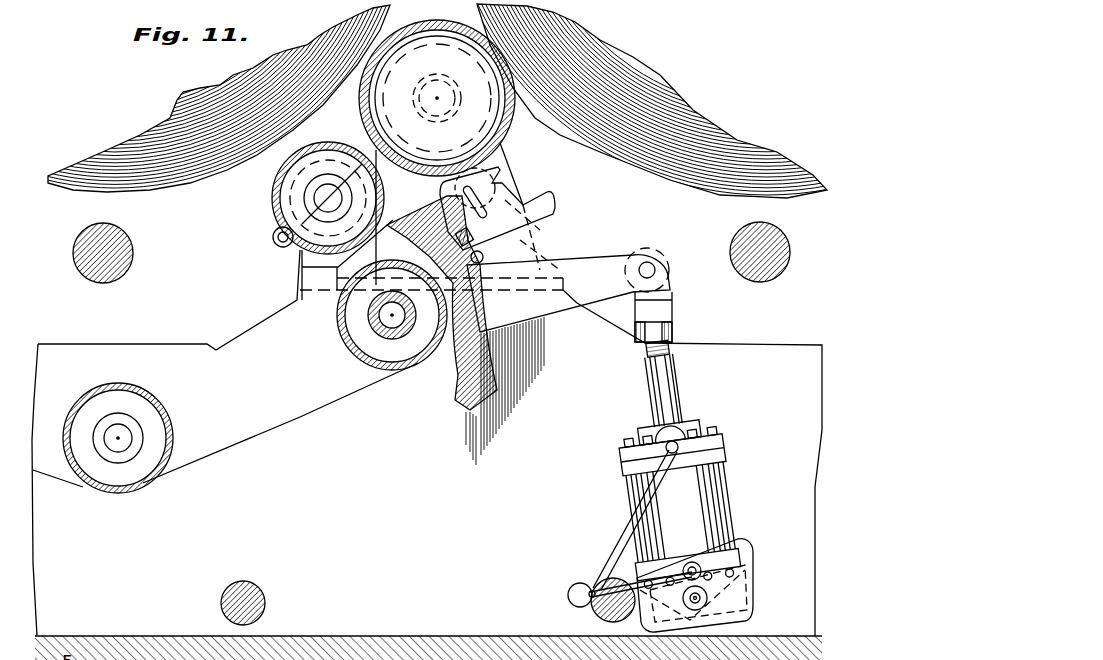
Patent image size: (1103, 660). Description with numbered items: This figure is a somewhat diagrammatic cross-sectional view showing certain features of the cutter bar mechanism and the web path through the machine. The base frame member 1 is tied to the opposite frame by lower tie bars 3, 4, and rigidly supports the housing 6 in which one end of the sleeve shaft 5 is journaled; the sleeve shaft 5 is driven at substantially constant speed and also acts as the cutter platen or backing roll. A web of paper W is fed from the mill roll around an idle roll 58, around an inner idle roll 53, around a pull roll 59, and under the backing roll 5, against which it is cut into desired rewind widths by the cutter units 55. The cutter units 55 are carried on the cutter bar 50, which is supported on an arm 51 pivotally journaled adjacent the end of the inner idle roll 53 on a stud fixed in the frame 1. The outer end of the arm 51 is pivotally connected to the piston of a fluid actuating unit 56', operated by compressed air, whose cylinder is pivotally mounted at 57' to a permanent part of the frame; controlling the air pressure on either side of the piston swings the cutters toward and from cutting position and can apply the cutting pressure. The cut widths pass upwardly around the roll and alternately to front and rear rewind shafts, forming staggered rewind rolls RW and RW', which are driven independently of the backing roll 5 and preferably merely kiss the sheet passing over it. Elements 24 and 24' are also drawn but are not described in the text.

The base frame member 1 is at (776, 345).
The lower tie bar 3 is at (265, 603).
The lower tie bar 4 is at (587, 607).
The sleeve shaft 5 is at (447, 24).
The housing 6 is at (302, 265).
The guide rod 24 is at (739, 252).
The guide rod 24' is at (126, 253).
The cutter bar 50 is at (455, 397).
The arm 51 is at (548, 306).
The inner idle roll 53 is at (340, 337).
The cutter unit 55 is at (530, 175).
The fluid actuating unit 56' is at (671, 462).
The cylinder pivot mounting 57' is at (693, 585).
The idle roll 58 is at (172, 425).
The pull roll 59 is at (272, 204).
The rewind roll RW is at (767, 105).
The rewind roll RW' is at (204, 103).
The web of paper W is at (290, 420).